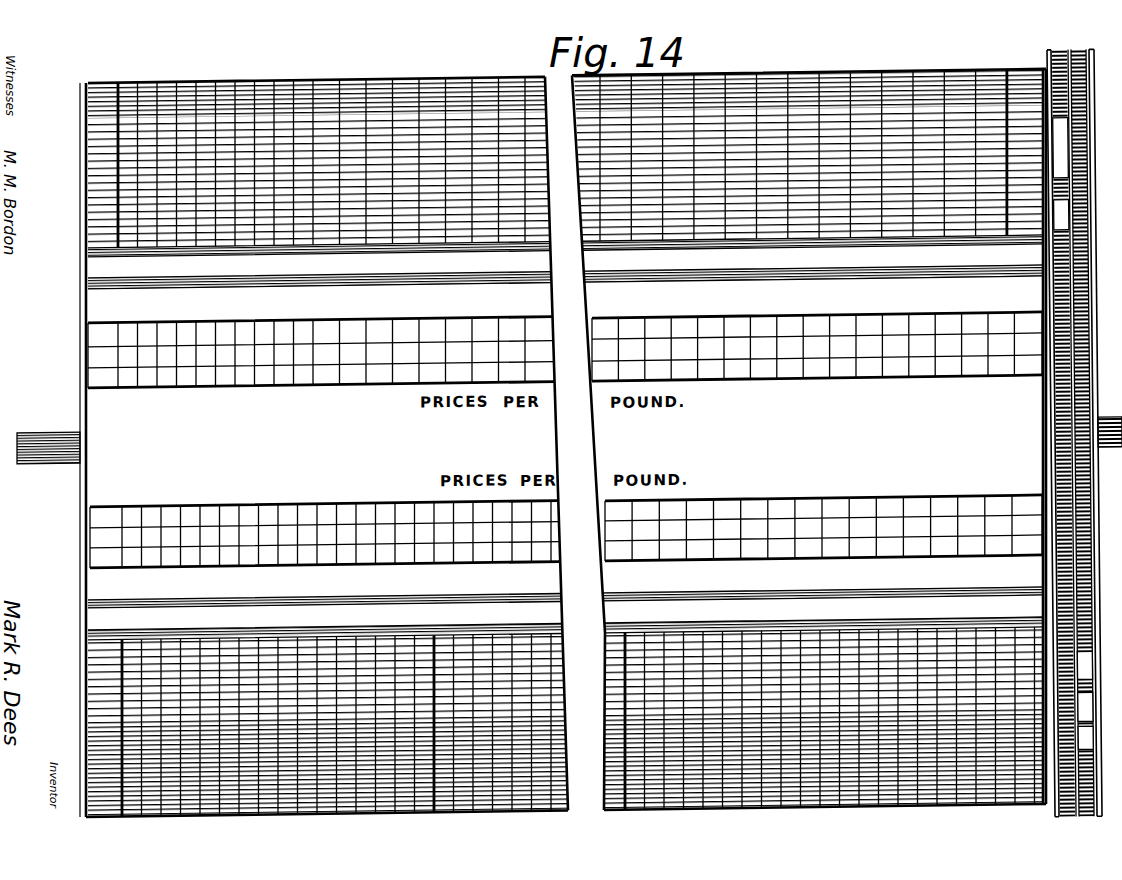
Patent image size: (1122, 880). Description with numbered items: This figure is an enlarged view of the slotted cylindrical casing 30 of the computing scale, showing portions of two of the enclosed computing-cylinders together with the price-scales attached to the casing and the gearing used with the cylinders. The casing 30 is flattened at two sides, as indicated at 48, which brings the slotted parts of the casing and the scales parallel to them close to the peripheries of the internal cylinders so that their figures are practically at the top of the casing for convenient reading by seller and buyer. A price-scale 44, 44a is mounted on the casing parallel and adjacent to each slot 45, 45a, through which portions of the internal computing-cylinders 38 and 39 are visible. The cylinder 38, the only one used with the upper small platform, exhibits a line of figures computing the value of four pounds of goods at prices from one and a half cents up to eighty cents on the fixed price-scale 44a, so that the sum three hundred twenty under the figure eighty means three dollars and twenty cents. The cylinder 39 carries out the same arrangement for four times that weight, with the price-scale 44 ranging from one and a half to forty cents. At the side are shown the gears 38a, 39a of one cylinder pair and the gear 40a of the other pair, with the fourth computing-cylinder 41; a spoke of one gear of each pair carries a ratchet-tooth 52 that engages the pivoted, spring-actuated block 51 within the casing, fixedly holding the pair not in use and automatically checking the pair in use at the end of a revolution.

The cylindrical casing 30 is at (385, 92).
The computing-cylinder 38 is at (88, 566).
The gear 38a is at (1063, 822).
The computing-cylinder 39 is at (122, 342).
The gear 39a is at (1048, 412).
The gear 40a is at (1089, 72).
The computing-cylinder 41 is at (1072, 646).
The price-scale 44 is at (88, 352).
The price-scale 44a is at (137, 549).
The slot 45 is at (302, 328).
The slot 45a is at (307, 566).
The flattened side 48 is at (65, 412).
The block 51 is at (1055, 115).
The ratchet-tooth 52 is at (1072, 696).